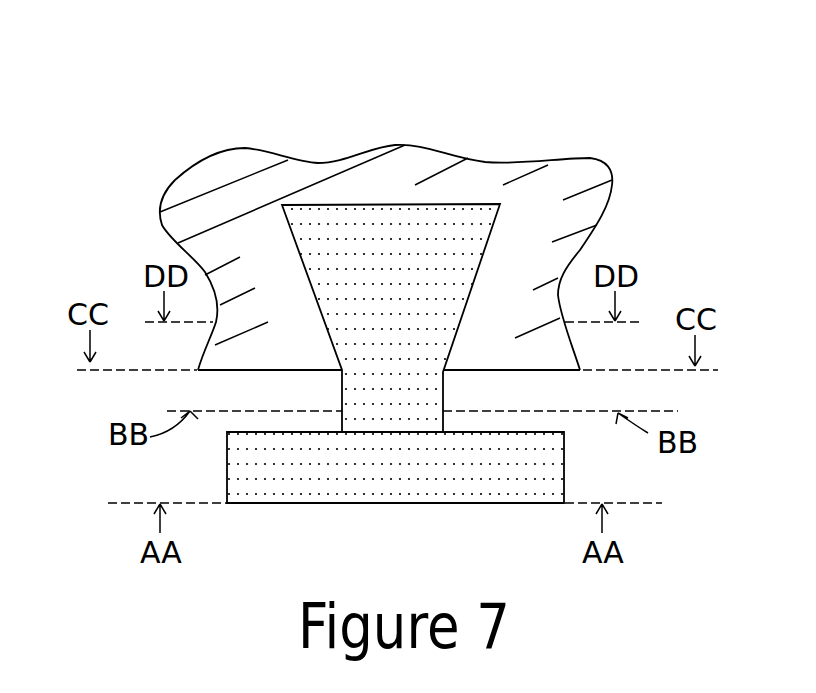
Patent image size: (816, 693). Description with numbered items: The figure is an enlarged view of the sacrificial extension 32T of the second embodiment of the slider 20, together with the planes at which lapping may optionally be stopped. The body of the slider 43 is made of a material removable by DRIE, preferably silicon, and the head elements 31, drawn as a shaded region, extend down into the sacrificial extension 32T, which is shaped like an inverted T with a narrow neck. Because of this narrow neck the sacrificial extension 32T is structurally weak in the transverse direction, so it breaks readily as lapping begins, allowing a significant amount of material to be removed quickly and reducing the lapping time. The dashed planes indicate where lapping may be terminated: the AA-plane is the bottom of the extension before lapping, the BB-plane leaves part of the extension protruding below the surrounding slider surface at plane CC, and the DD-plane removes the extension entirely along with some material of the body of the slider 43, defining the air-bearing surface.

The slider 20 is at (293, 125).
The body of the slider 43 is at (210, 173).
The head elements 31 is at (432, 228).
The sacrificial extension 32T is at (363, 488).